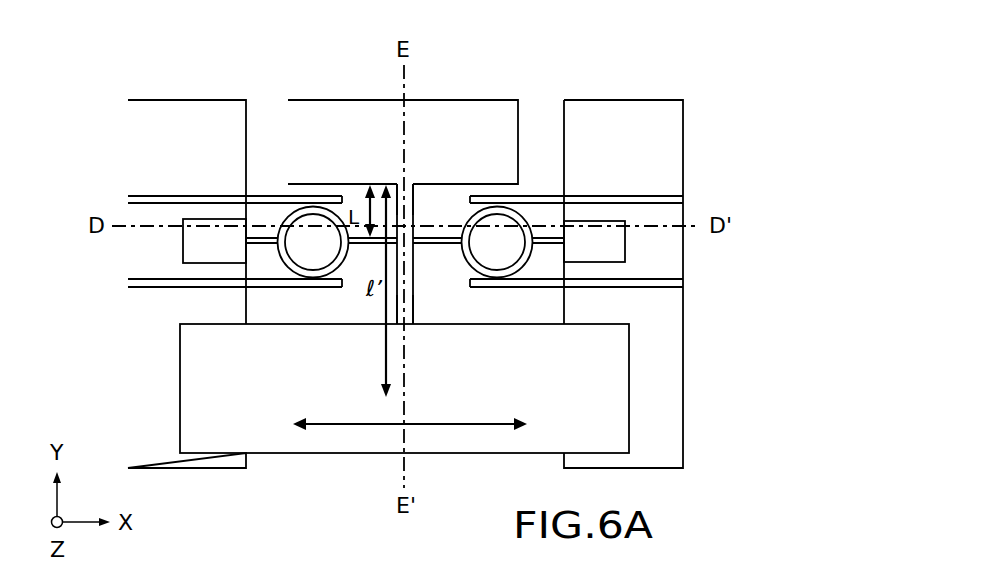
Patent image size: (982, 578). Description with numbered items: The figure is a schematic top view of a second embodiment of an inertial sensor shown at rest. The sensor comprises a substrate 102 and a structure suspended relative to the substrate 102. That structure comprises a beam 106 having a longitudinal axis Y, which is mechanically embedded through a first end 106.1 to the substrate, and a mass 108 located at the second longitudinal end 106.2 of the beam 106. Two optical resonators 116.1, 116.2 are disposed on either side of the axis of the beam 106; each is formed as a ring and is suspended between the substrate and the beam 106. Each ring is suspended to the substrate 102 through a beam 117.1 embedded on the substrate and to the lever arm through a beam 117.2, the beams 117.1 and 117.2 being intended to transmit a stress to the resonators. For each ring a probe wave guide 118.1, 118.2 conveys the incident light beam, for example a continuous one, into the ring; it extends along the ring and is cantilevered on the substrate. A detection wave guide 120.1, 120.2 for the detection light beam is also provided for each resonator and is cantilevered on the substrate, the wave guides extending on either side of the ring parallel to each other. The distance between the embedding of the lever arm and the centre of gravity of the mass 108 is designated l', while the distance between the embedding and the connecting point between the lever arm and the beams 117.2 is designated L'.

The substrate 102 is at (675, 385).
The mass 108 is at (615, 432).
The beam 106 is at (413, 290).
The first end 106.1 is at (402, 184).
The second longitudinal end 106.2 is at (407, 325).
The optical resonator 116.1 is at (527, 218).
The optical resonator 116.2 is at (283, 218).
The beam 117.1 is at (548, 245).
The beam 117.2 is at (434, 238).
The probe wave guide 118.1 is at (666, 196).
The second upper arm 118.2 is at (147, 196).
The detection wave guide 120.1 is at (663, 287).
The second lower arm 120.2 is at (148, 287).